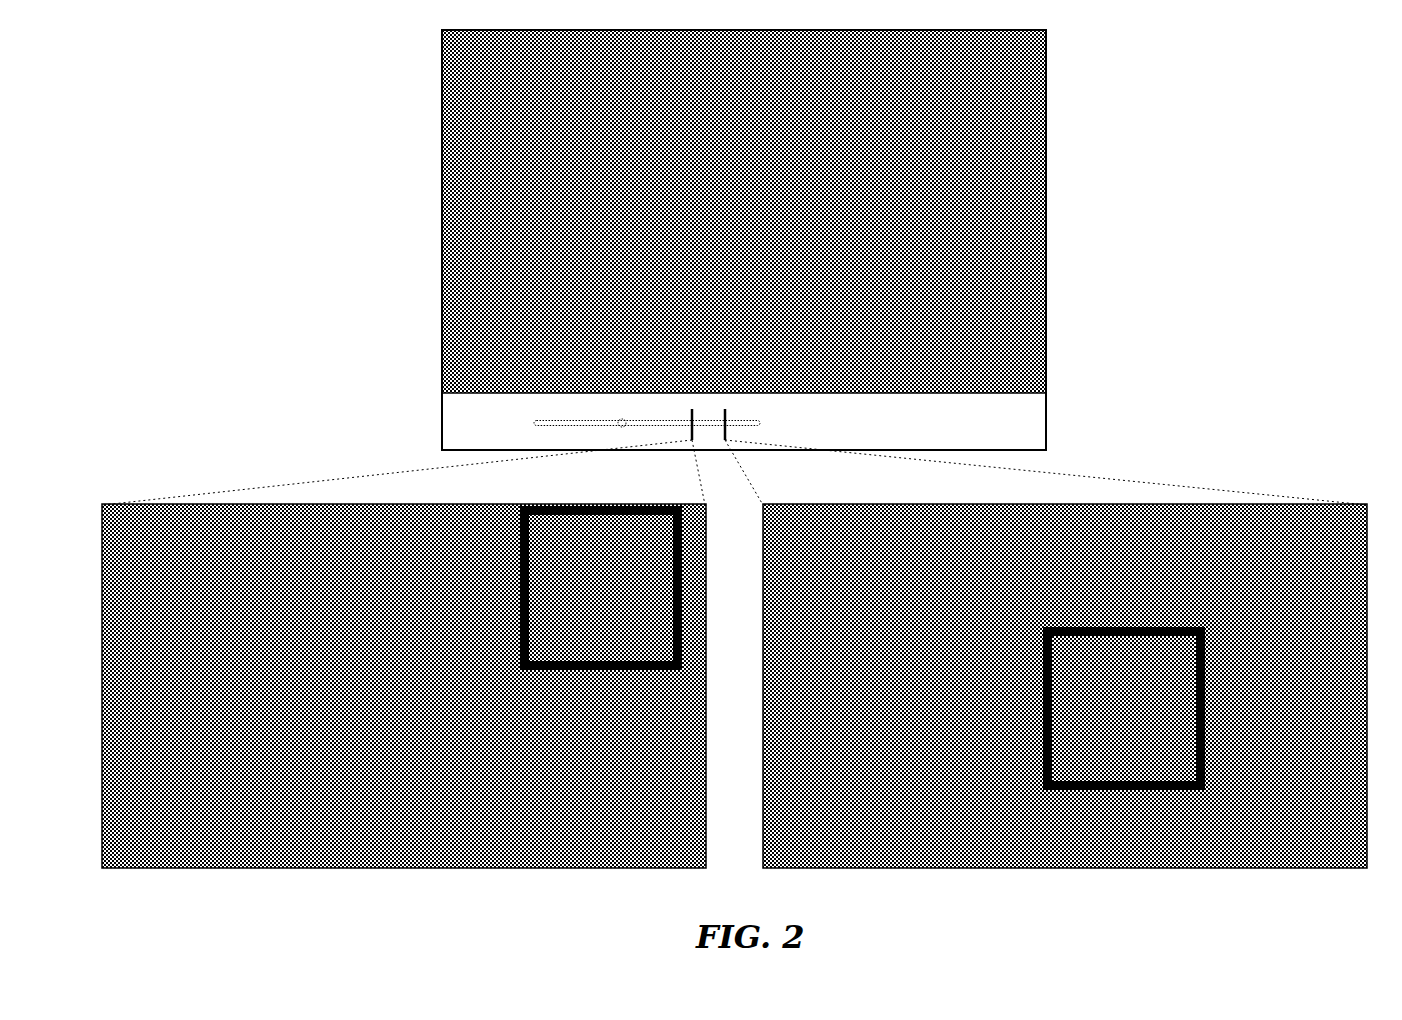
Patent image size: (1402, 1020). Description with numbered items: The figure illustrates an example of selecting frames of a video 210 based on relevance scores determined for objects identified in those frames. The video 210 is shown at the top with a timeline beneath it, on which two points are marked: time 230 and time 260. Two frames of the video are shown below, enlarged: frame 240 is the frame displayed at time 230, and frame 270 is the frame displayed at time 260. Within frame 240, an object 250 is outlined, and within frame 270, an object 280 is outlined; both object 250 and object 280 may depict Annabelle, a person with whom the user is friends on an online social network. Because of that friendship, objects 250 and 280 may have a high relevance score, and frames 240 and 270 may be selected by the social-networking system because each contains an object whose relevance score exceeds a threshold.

The video 210 is at (442, 215).
The time 230 is at (692, 413).
The frame 240 is at (295, 868).
The object 250 is at (580, 670).
The time 260 is at (725, 413).
The frame 270 is at (958, 868).
The object 280 is at (1100, 790).